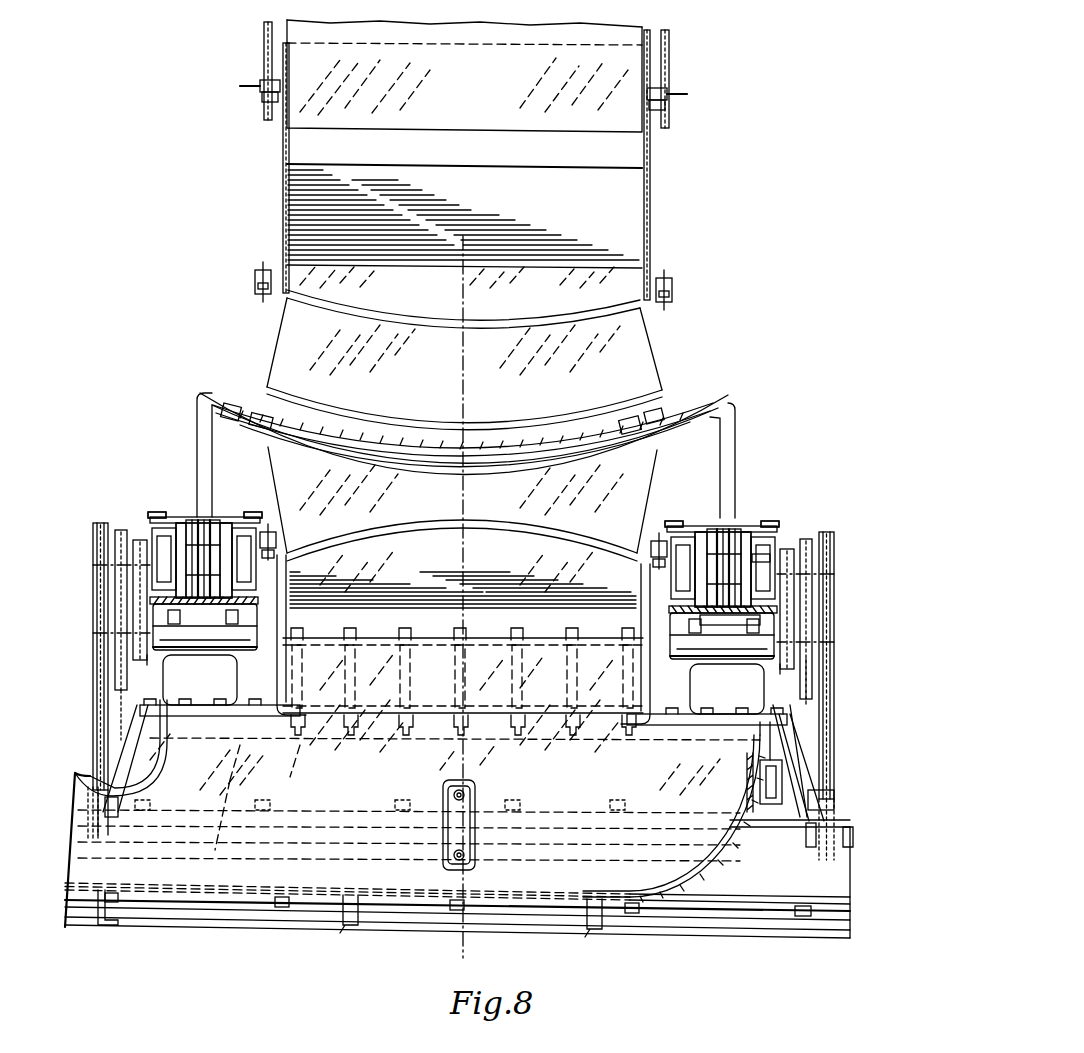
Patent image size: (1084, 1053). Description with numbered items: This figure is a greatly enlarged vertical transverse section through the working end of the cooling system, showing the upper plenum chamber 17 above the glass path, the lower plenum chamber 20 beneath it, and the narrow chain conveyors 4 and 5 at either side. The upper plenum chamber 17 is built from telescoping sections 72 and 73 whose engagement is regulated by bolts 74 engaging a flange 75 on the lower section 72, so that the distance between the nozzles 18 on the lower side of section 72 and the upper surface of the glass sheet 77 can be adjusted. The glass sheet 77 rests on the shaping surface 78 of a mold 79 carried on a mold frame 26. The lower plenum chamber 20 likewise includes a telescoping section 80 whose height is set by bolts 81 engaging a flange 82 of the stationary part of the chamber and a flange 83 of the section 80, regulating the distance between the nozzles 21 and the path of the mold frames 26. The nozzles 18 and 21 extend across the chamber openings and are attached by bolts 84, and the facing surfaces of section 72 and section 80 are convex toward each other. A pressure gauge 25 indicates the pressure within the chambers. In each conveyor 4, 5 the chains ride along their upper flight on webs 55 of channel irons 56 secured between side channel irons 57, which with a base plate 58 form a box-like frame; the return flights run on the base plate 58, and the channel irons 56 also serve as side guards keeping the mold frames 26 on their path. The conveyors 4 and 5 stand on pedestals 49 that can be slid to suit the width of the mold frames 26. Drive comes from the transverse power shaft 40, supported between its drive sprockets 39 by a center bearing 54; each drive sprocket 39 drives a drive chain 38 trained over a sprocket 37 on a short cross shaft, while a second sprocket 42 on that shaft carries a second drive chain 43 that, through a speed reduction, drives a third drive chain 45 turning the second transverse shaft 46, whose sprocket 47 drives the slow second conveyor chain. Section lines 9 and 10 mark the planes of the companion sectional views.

The conveyor 4 is at (738, 532).
The conveyor 5 is at (160, 518).
The section line 9 is at (463, 236).
The section line 10 is at (203, 517).
The plenum chamber 17 is at (660, 164).
The nozzles 18 is at (290, 338).
The lower plenum chamber 20 is at (621, 888).
The nozzles 21 is at (628, 494).
The pressure gauge 25 is at (782, 783).
The mold frame 26 is at (765, 437).
The sprocket 37 is at (95, 532).
The drive chain 38 is at (103, 525).
The drive sprocket 39 is at (122, 808).
The transverse power shaft 40 is at (290, 818).
The second sprocket 42 is at (124, 538).
The second drive chain 43 is at (122, 688).
The third drive chain 45 is at (146, 666).
The second transverse shaft 46 is at (248, 580).
The sprocket 47 is at (770, 556).
The pedestal 49 is at (248, 684).
The center bearing 54 is at (445, 808).
The web 55 is at (208, 520).
The channel iron 56 is at (222, 524).
The side channel iron 57 is at (157, 512).
The base plate 58 is at (727, 560).
The telescoping section 72 is at (283, 207).
The telescoping section 73 is at (642, 44).
The bolt 74 is at (264, 57).
The flange 75 is at (258, 90).
The glass sheet 77 is at (632, 430).
The shaping surface 78 is at (640, 430).
The mold 79 is at (630, 444).
The telescoping section 80 is at (640, 606).
The bolt 81 is at (522, 674).
The flange 82 is at (540, 714).
The flange 83 is at (556, 640).
The bolt 84 is at (258, 276).